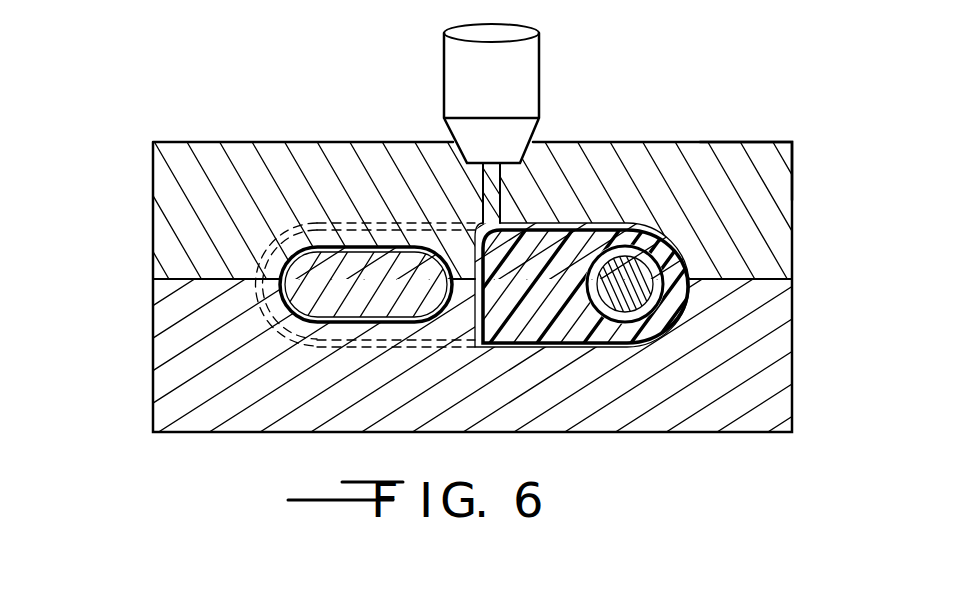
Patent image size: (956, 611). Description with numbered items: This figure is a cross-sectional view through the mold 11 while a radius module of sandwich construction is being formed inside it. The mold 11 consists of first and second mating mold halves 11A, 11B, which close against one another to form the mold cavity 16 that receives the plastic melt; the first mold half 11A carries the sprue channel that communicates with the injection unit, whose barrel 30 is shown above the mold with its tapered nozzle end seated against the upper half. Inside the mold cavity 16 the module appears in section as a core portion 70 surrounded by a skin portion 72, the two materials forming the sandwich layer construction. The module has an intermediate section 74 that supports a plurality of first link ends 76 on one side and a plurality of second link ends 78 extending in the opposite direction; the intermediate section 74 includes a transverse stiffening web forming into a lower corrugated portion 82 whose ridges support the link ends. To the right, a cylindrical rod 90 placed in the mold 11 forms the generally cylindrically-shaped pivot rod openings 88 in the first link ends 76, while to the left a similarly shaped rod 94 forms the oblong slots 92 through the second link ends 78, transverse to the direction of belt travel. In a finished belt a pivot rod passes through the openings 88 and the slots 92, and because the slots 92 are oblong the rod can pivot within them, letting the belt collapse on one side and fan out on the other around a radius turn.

The mold 11 is at (217, 143).
The first mold half 11A is at (170, 187).
The second mold half 11B is at (157, 367).
The mold cavity 16 is at (497, 192).
The barrel 30 is at (522, 77).
The core portion 70 is at (597, 330).
The skin portion 72 is at (667, 345).
The intermediate section 74 is at (620, 228).
The first link ends 76 is at (617, 243).
The second link ends 78 is at (262, 261).
The corrugated portion 82 is at (462, 345).
The pivot rod openings 88 is at (624, 248).
The cylindrical rod 90 is at (683, 260).
The oblong slots 92 is at (383, 250).
The oblong rod 94 is at (337, 267).